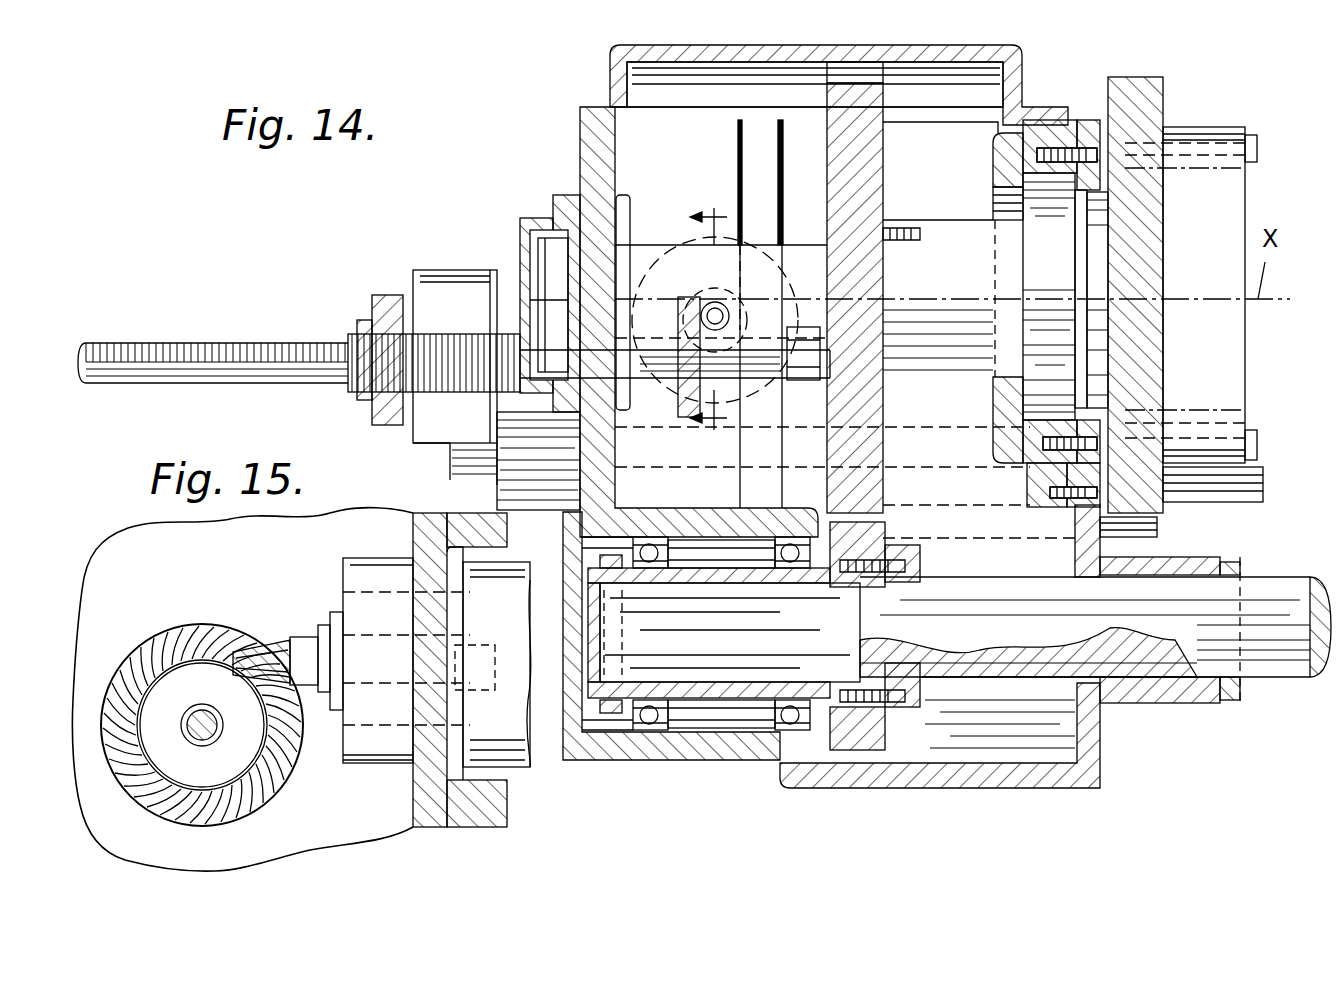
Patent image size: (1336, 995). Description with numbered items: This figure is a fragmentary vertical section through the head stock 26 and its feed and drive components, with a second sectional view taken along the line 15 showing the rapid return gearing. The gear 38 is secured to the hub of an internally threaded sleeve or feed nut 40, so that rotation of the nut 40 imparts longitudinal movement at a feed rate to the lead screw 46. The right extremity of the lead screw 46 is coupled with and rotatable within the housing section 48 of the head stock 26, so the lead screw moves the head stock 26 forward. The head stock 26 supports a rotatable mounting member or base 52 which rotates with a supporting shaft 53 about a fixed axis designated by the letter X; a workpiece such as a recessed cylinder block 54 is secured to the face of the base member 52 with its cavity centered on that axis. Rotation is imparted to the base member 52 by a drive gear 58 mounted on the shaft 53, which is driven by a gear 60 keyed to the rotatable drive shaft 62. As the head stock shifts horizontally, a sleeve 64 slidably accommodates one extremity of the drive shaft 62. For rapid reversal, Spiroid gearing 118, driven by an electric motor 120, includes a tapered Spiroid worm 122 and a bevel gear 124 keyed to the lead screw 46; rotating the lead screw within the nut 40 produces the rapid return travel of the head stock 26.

In FIG. 14, the head stock 26 is at (1032, 68).
In FIG. 14, the drive gear 58 is at (862, 162).
In FIG. 14, the gear 60 is at (870, 725).
In FIG. 14, the sleeve 64 is at (716, 692).
In FIG. 14, the drive shaft 62 is at (998, 588).
In FIG. 14, the housing section 48 is at (752, 152).
In FIG. 14, the section line 15 is at (713, 319).
In FIG. 14, the electric motor 120 is at (792, 284).
In FIG. 15, the electric motor 120 is at (525, 748).
In FIG. 14, the bevel gear 124 is at (682, 400).
In FIG. 15, the bevel gear 124 is at (182, 645).
In FIG. 14, the supporting shaft 53 is at (858, 300).
In FIG. 14, the rotatable mounting member 52 is at (1125, 95).
In FIG. 14, the cylinder block 54 is at (1210, 457).
In FIG. 14, the lead screw 46 is at (222, 364).
In FIG. 15, the lead screw 46 is at (200, 735).
In FIG. 14, the gear 38 is at (370, 312).
In FIG. 14, the feed nut 40 is at (452, 480).
In FIG. 15, the Spiroid worm 122 is at (233, 665).
In FIG. 15, the Spiroid gearing 118 is at (267, 628).